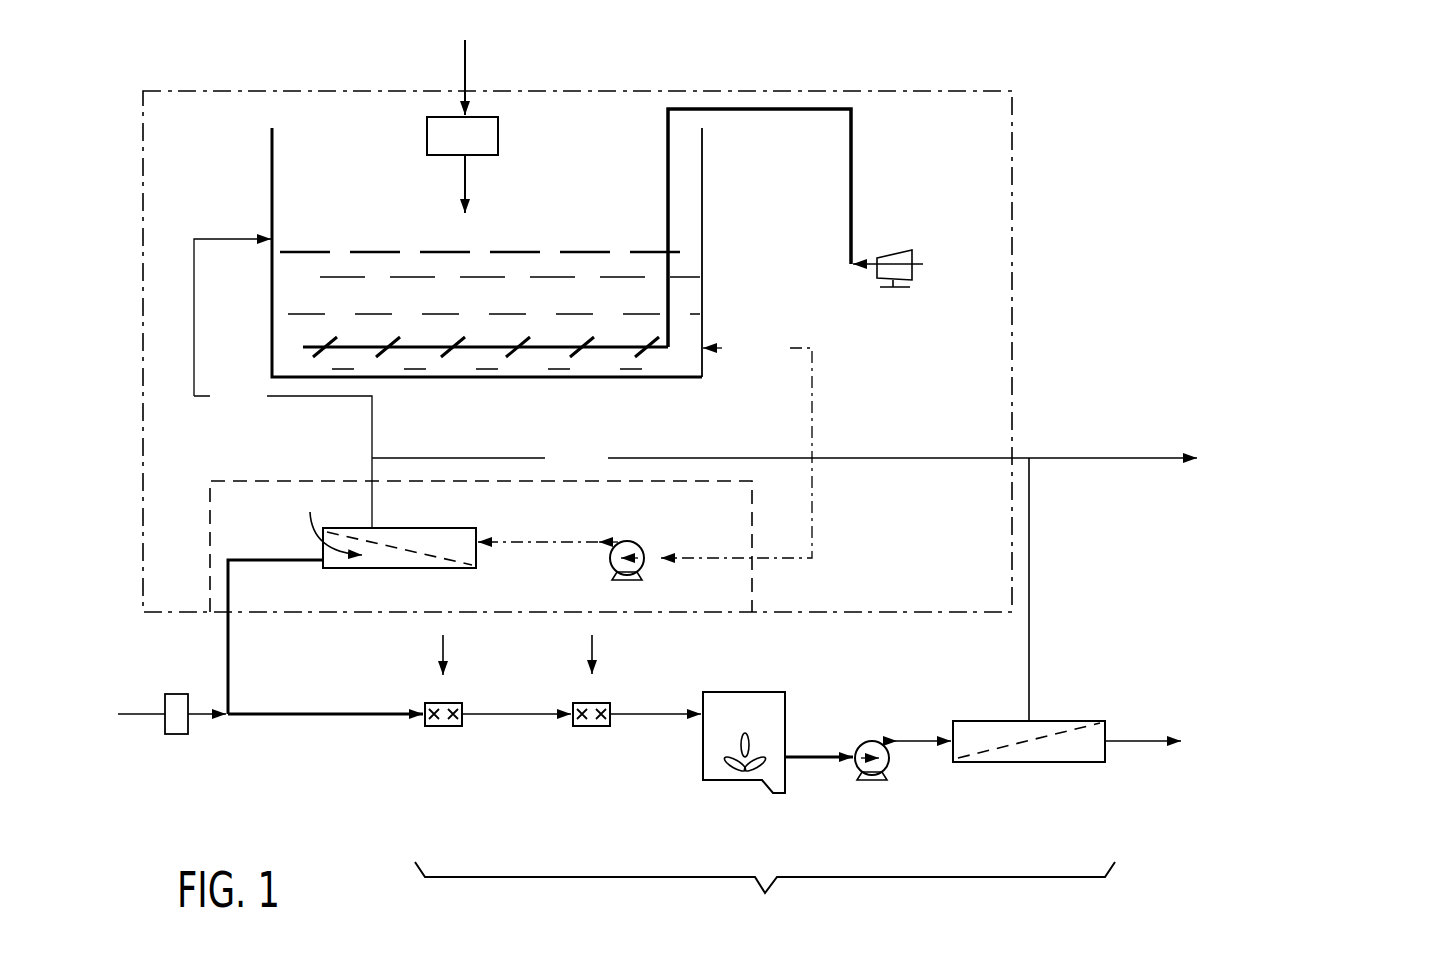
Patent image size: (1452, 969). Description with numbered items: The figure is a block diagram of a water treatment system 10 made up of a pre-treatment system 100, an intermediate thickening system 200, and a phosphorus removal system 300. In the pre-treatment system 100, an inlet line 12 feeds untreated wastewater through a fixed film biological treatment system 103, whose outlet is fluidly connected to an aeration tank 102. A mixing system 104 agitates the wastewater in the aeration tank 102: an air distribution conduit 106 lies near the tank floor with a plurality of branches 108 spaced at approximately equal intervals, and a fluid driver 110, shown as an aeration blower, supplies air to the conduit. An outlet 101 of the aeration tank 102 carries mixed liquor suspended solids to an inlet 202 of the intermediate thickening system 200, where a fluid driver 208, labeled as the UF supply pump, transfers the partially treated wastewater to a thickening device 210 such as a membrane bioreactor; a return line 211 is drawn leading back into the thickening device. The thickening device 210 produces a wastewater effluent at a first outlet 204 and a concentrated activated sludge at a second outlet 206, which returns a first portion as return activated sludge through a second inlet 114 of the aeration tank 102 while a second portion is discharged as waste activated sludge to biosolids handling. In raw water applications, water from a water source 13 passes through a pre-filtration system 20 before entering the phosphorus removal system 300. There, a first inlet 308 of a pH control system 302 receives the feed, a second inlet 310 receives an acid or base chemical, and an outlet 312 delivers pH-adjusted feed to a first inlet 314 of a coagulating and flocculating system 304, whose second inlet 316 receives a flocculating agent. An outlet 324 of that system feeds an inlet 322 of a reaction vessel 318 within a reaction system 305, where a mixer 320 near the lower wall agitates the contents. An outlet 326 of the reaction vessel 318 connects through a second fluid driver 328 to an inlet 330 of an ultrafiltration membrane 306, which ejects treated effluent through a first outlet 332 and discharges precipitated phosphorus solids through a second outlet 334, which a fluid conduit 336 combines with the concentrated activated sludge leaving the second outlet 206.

The water treatment system 10 is at (195, 77).
The inlet line 12 is at (467, 52).
The water source 13 is at (130, 714).
The pre-filtration system 20 is at (175, 736).
The pre-treatment system 100 is at (130, 223).
The outlet of the aeration tank 101 is at (703, 348).
The aeration tank 102 is at (702, 213).
The fixed film biological treatment system 103 is at (575, 137).
The mixing system 104 is at (963, 273).
The air distribution conduit 106 is at (557, 347).
The branches 108 is at (455, 347).
The fluid driver 110 is at (897, 250).
The second inlet of the aeration tank 114 is at (268, 242).
The intermediate thickening system 200 is at (263, 480).
The inlet of the intermediate thickening system 202 is at (653, 556).
The first outlet of the intermediate thickening system 204 is at (322, 558).
The second outlet of the intermediate thickening system 206 is at (373, 523).
The fluid driver 208 is at (628, 542).
The thickening device 210 is at (327, 521).
The UF supply return line 211 is at (480, 540).
The phosphorus removal system 300 is at (765, 893).
The pH control system 302 is at (440, 736).
The coagulating and flocculating system 304 is at (588, 737).
The reaction system 305 is at (742, 686).
The ultrafiltration membrane 306 is at (1015, 712).
The first inlet of the pH control system 308 is at (420, 722).
The second inlet of the pH control system 310 is at (440, 672).
The outlet of the pH control system 312 is at (463, 718).
The first inlet of the coagulating and flocculating system 314 is at (570, 722).
The second inlet of the coagulating and flocculating system 316 is at (590, 672).
The reaction vessel 318 is at (785, 710).
The mixer 320 is at (745, 757).
The inlet of the reaction vessel 322 is at (703, 717).
The outlet of the coagulating and flocculating system 324 is at (612, 718).
The outlet of the reaction vessel 326 is at (786, 755).
The second fluid driver 328 is at (890, 764).
The inlet of the ultrafiltration membrane 330 is at (948, 740).
The first outlet of the ultrafiltration membrane 332 is at (1107, 738).
The second outlet of the ultrafiltration membrane 334 is at (1030, 721).
The fluid conduit 336 is at (1032, 600).